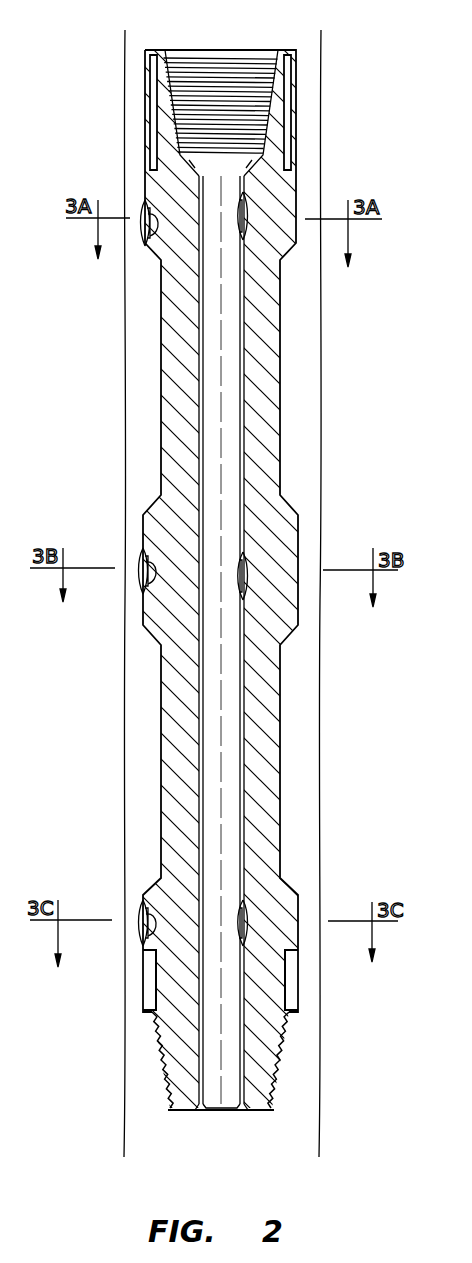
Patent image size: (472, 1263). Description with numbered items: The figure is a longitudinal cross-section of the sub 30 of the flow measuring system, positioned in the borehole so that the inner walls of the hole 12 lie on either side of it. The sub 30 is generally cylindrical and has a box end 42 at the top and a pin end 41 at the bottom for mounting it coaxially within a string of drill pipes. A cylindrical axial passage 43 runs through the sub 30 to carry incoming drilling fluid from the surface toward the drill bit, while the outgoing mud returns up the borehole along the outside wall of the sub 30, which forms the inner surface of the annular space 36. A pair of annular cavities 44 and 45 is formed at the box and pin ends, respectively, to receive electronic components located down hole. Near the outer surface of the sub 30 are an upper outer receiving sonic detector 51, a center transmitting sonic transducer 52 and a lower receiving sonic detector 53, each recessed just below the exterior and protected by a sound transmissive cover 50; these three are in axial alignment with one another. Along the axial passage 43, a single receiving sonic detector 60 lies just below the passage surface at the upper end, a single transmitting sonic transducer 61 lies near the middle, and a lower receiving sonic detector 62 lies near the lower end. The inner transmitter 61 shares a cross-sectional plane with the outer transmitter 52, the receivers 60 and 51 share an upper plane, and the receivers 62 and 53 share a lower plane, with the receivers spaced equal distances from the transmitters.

The hole 12 is at (125, 55).
The sub 30 is at (175, 531).
The annular space 36 is at (140, 335).
The pin end 41 is at (268, 1080).
The box end 42 is at (221, 50).
The axial passage 43 is at (206, 370).
The annular cavity 44 is at (155, 103).
The annular cavity 45 is at (147, 990).
The sound transmissive cover 50 is at (145, 228).
The outer receiving sonic detector 51 is at (148, 242).
The transmitting sonic transducer 52 is at (143, 606).
The receiving sonic detector 53 is at (138, 946).
The receiving sonic detector 60 is at (250, 208).
The transmitting sonic transducer 61 is at (245, 576).
The receiving sonic detector 62 is at (245, 920).